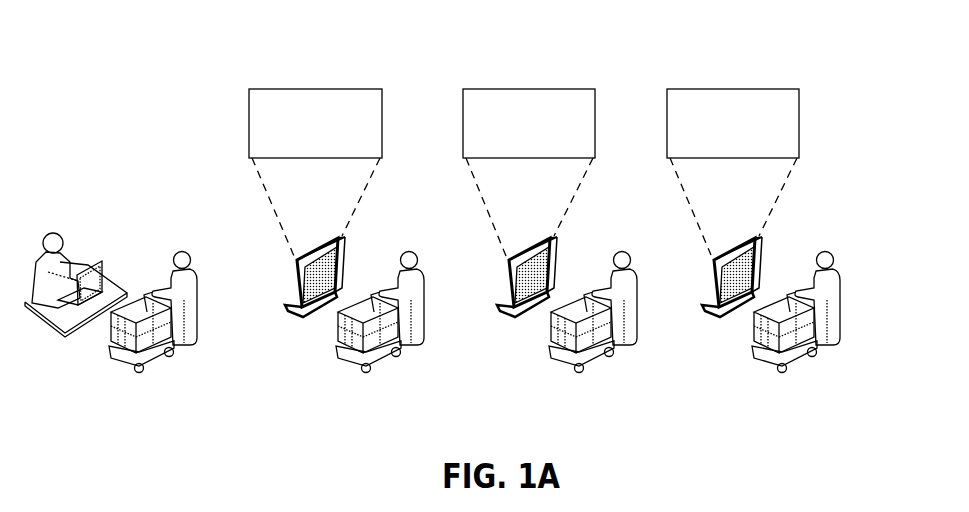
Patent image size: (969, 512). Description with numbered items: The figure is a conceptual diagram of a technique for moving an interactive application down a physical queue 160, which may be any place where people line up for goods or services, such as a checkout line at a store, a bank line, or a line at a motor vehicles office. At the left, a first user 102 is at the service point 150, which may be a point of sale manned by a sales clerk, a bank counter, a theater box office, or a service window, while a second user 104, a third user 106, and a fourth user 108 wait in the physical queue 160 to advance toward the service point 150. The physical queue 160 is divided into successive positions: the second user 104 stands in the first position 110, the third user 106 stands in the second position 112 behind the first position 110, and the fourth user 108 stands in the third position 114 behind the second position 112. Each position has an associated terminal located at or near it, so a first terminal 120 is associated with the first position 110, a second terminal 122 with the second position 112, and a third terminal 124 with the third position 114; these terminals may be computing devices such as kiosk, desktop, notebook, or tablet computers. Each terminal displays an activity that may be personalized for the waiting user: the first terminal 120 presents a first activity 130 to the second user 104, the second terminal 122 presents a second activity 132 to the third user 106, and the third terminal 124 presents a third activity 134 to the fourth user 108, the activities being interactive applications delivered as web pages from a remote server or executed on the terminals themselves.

The physical queue 160 is at (108, 54).
The service point 150 is at (84, 240).
The first user 102 is at (179, 295).
The second user 104 is at (413, 251).
The third user 106 is at (619, 295).
The fourth user 108 is at (822, 295).
The first position 110 is at (325, 389).
The second position 112 is at (528, 394).
The third position 114 is at (737, 395).
The first terminal 120 is at (305, 322).
The second terminal 122 is at (505, 293).
The third terminal 124 is at (710, 293).
The first activity 130 is at (290, 89).
The second activity 132 is at (500, 89).
The third activity 134 is at (707, 89).